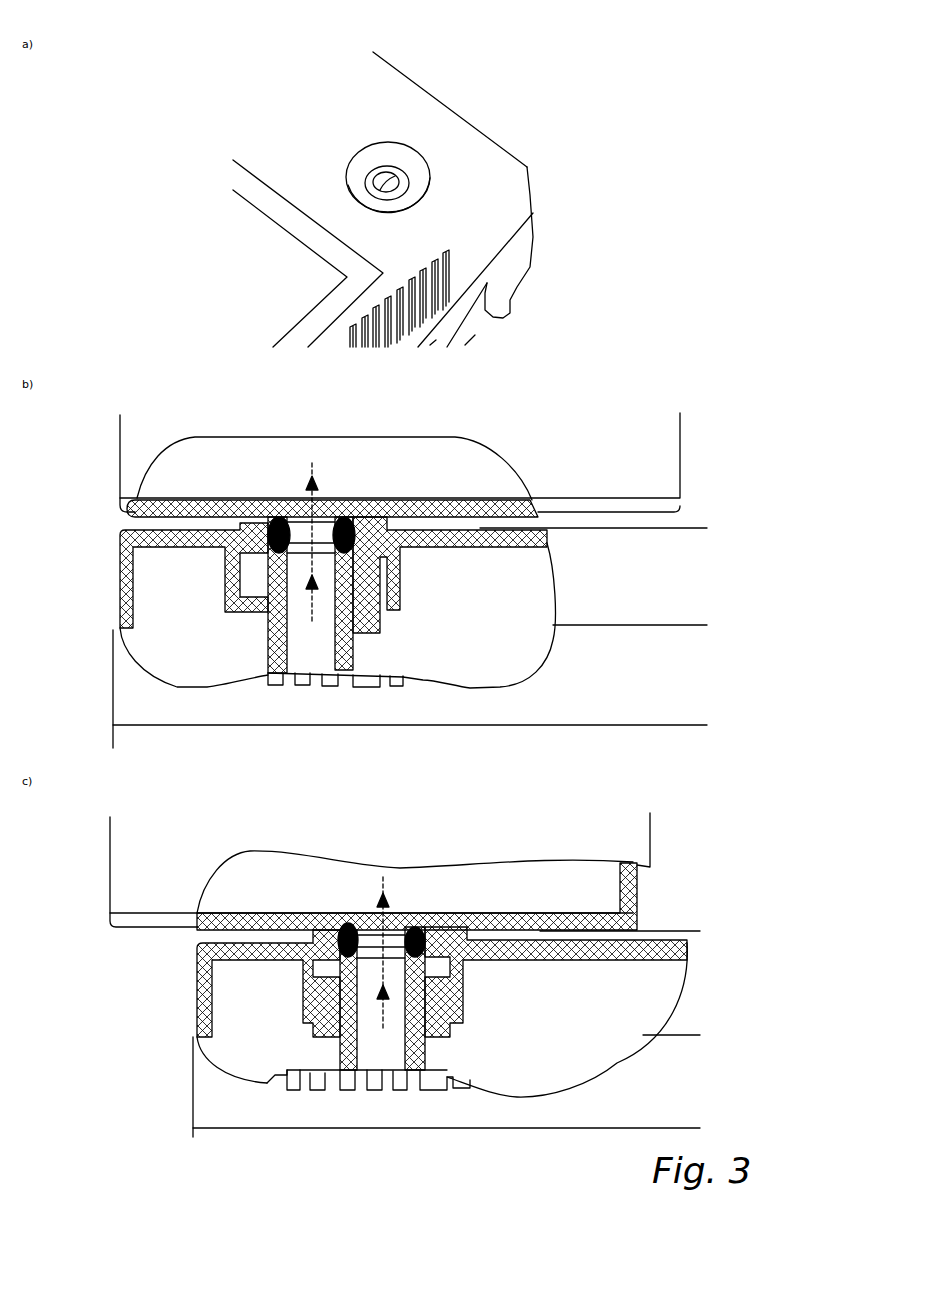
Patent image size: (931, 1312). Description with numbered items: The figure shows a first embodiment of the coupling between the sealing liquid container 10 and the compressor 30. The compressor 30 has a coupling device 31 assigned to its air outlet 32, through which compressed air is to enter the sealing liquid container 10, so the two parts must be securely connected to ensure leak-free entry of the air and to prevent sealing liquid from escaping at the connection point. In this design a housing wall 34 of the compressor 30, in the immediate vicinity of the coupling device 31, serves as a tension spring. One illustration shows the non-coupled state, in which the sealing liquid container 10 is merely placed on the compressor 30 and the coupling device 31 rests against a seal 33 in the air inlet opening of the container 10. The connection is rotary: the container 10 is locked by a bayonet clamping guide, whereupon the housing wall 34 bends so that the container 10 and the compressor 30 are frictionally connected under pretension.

The sealing liquid container 10 is at (120, 442).
The compressor 30 is at (510, 187).
The coupling device 31 is at (396, 167).
The air outlet 32 is at (362, 200).
The seal 33 is at (333, 503).
The housing wall 34 is at (447, 147).